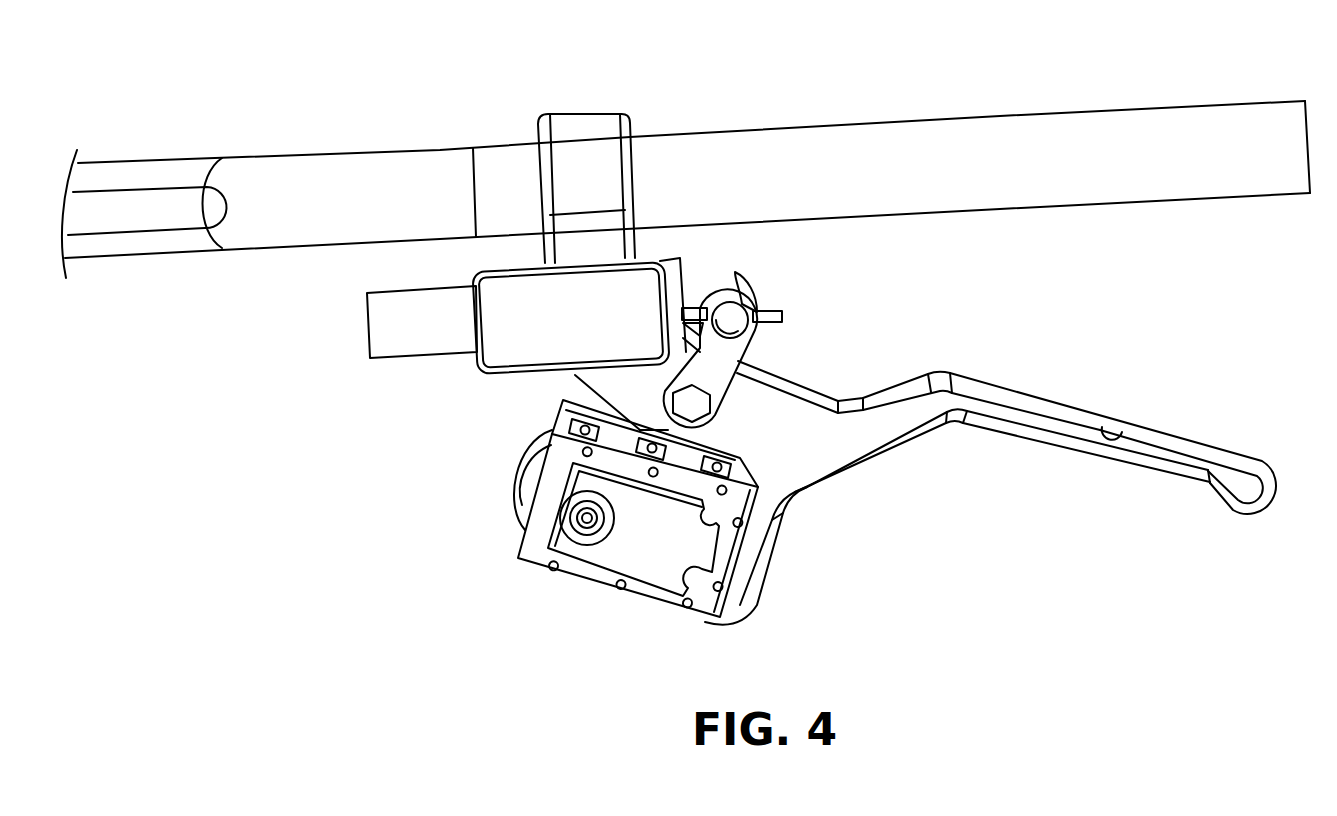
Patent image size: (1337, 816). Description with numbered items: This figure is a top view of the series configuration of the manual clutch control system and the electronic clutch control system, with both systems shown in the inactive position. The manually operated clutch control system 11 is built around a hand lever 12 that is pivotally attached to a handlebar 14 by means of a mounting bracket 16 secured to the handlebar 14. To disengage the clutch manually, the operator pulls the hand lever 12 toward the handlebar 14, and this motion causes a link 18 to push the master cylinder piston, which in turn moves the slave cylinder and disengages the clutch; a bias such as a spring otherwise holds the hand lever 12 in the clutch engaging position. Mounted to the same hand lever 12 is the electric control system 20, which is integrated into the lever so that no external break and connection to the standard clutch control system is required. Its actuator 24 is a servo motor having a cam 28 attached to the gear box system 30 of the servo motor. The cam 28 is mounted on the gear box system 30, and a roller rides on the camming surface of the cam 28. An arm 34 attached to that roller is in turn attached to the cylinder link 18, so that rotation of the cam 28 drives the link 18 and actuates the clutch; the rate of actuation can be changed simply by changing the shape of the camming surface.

The manually operated clutch control system 11 is at (955, 352).
The hand lever 12 is at (1012, 403).
The handlebar 14 is at (923, 147).
The mounting bracket 16 is at (577, 143).
The link 18 is at (762, 304).
The electric control system 20 is at (540, 590).
The actuator 24 is at (643, 537).
The cam 28 is at (525, 483).
The gear box system 30 is at (586, 522).
The arm 34 is at (740, 355).